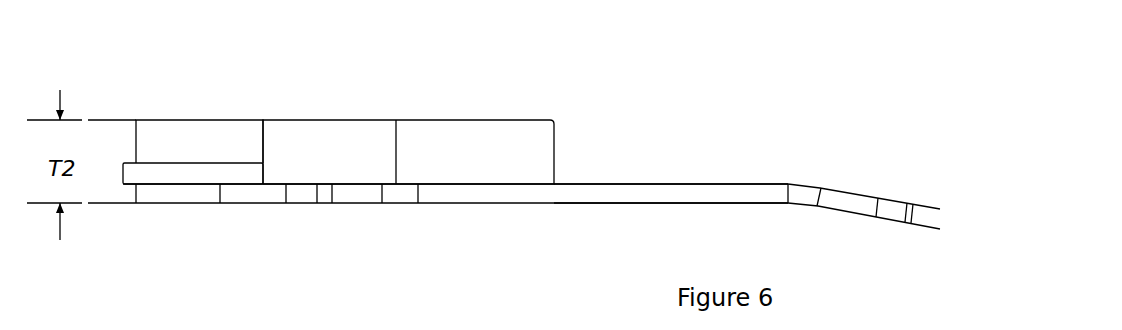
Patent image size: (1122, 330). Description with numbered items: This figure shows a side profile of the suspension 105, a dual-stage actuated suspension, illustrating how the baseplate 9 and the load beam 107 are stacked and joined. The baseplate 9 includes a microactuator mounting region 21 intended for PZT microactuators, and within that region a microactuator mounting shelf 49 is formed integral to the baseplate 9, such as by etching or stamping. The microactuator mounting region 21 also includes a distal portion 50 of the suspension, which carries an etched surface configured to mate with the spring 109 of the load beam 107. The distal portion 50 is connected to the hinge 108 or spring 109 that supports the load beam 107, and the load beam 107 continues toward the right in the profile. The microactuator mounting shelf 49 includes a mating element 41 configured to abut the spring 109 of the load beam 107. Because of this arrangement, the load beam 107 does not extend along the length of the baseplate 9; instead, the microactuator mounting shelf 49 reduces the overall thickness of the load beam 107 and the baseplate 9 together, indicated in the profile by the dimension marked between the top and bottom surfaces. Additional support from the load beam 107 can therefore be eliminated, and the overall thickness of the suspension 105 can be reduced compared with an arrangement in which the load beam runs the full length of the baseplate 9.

The baseplate 9 is at (297, 75).
The microactuator mounting region 21 is at (130, 137).
The mating element 41 is at (300, 198).
The microactuator mounting shelf 49 is at (197, 173).
The distal portion 50 is at (422, 135).
The suspension 105 is at (573, 92).
The load beam 107 is at (830, 178).
The hinge 108 is at (689, 158).
The spring 109 is at (413, 210).